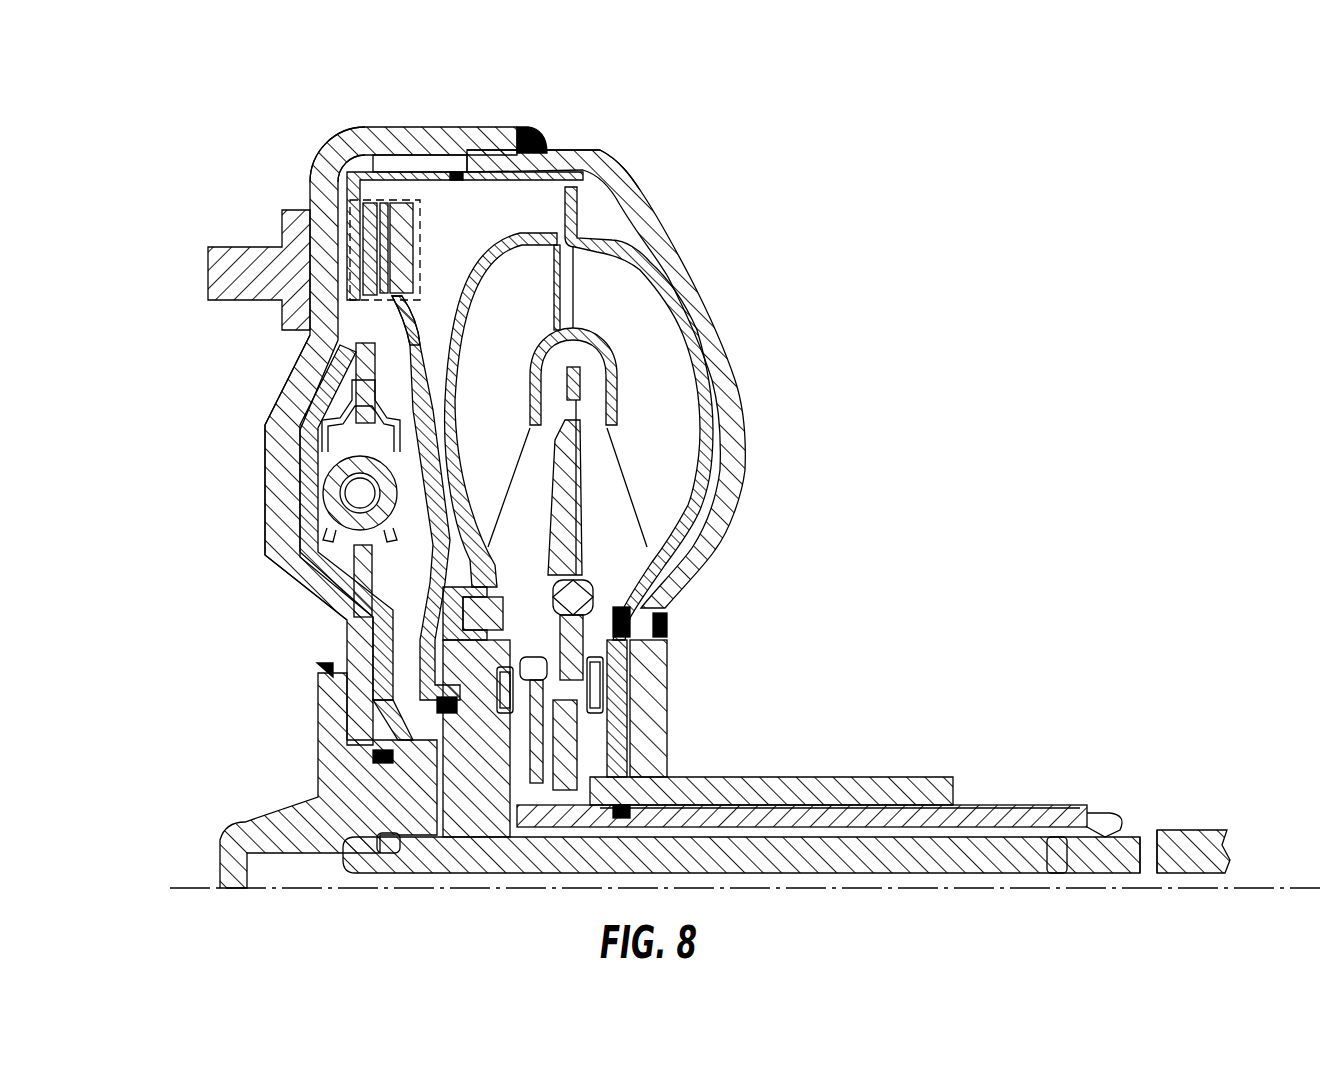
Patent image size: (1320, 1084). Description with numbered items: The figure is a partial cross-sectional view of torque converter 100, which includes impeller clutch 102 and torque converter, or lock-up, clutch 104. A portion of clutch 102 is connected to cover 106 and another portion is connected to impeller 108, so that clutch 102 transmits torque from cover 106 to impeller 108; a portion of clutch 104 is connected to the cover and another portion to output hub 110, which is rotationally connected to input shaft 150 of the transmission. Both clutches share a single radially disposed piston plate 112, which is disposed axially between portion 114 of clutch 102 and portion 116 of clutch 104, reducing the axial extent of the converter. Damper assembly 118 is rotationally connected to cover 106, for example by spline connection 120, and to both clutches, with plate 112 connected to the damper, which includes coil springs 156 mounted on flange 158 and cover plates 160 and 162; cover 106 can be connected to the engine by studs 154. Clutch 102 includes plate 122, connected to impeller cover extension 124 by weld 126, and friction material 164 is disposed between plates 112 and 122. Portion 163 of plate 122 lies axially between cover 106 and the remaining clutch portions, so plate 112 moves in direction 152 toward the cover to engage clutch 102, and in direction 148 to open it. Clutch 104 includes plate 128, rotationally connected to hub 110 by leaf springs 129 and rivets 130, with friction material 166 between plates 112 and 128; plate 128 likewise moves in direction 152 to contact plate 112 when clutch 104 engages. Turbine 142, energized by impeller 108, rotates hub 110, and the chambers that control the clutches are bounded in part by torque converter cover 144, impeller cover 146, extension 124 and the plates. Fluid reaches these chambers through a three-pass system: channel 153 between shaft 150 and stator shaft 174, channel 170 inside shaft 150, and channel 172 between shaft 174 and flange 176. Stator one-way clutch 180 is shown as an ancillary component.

The torque converter 100 is at (1082, 260).
The impeller clutch 102 is at (360, 157).
The torque converter clutch 104 is at (393, 153).
The cover 106 is at (293, 402).
The impeller 108 is at (657, 336).
The output hub 110 is at (480, 820).
The plate 112 is at (318, 553).
The portion 114 is at (343, 163).
The portion 116 is at (400, 200).
The damper assembly 118 is at (320, 513).
The spline connection 120 is at (400, 773).
The plate 122 is at (367, 230).
The impeller cover extension 124 is at (587, 150).
The weld 126 is at (530, 123).
The plate 128 is at (416, 313).
The leaf springs 129 is at (413, 560).
The rivets 130 is at (503, 613).
The turbine 142 is at (545, 317).
The torque converter cover 144 is at (702, 292).
The impeller cover 146 is at (706, 362).
The direction 148 is at (987, 593).
The input shaft 150 is at (1133, 850).
The direction 152 is at (912, 637).
The channel 153 is at (797, 833).
The studs 154 is at (207, 277).
The coil springs 156 is at (322, 495).
The flange 158 is at (377, 690).
The cover plate 160 is at (340, 437).
The cover plate 162 is at (392, 418).
The portion 163 is at (357, 280).
The friction material 164 is at (367, 238).
The friction material 166 is at (418, 340).
The channel 170 is at (1180, 903).
The channel 172 is at (813, 815).
The stator shaft 174 is at (822, 822).
The flange 176 is at (750, 787).
The stator one-way clutch 180 is at (617, 693).